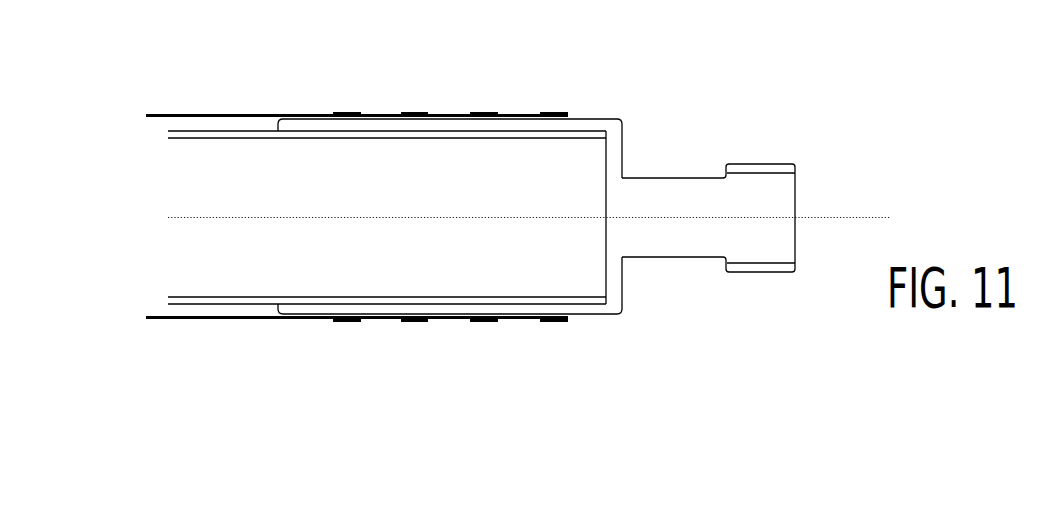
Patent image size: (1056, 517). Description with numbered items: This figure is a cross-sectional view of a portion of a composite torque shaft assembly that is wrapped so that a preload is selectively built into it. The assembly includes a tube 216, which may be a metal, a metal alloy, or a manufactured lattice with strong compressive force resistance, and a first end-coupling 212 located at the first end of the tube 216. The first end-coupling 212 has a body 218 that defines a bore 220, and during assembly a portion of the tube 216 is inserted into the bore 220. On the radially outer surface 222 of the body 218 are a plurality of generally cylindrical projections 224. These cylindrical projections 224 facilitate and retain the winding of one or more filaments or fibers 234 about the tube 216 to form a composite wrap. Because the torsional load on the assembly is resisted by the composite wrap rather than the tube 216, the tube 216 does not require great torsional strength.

The first end-coupling 212 is at (662, 200).
The tube 216 is at (221, 135).
The body 218 is at (322, 126).
The bore 220 is at (605, 177).
The radially outer surface 222 is at (585, 118).
The cylindrical projections 224 is at (411, 115).
The fiber 234 is at (248, 116).